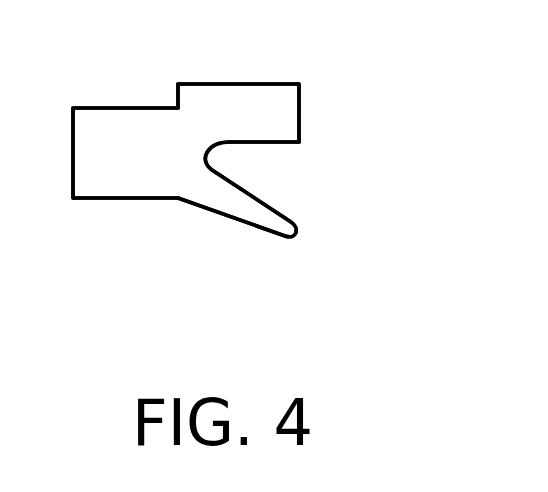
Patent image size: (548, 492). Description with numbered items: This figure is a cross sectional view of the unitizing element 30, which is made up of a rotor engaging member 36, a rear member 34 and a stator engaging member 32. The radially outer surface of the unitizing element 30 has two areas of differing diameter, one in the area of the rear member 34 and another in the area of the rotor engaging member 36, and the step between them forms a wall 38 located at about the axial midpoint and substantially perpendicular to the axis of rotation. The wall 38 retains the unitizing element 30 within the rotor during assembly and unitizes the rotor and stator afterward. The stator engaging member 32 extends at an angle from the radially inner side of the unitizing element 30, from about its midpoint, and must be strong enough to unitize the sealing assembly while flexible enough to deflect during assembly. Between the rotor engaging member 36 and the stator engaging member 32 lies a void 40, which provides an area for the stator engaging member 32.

The unitizing element 30 is at (322, 80).
The stator engaging member 32 is at (242, 205).
The rear member 34 is at (103, 127).
The rotor engaging member 36 is at (247, 105).
The wall 38 is at (168, 93).
The void 40 is at (248, 168).